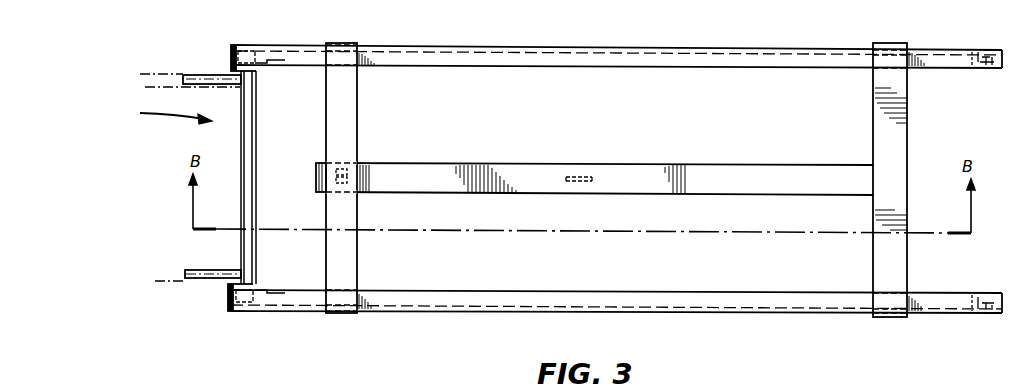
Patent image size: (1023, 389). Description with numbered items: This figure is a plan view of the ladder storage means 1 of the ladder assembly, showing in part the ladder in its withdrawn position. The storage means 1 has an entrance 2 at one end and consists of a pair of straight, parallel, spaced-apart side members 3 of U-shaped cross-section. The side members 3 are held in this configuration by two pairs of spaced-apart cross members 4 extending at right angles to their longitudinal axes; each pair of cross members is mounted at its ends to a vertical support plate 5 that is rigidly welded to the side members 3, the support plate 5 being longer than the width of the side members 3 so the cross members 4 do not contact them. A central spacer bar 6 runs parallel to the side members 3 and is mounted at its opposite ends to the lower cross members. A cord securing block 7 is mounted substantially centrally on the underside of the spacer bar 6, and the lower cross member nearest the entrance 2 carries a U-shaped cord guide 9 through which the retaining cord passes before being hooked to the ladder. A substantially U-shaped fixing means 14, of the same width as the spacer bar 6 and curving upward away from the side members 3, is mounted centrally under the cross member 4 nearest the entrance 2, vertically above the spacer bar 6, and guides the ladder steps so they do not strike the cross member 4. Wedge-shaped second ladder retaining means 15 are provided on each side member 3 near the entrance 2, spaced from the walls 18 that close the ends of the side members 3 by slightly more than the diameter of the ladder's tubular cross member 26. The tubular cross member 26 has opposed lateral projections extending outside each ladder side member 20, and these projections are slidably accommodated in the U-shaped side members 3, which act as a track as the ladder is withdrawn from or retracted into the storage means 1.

The ladder storage means 1 is at (476, 30).
The entrance 2 is at (166, 113).
The side members 3 is at (556, 52).
The upper cross members 4 is at (344, 263).
The vertical support plate 5 is at (346, 43).
The central spacer bar 6 is at (687, 171).
The cord securing block 7 is at (572, 175).
The U-shaped cord guide 9 is at (344, 168).
The fixing means 14 is at (316, 175).
The second ladder retaining means 15 is at (282, 62).
The walls 18 is at (234, 45).
The side member of ladder 20 is at (204, 77).
The tubular cross member 26 is at (256, 165).